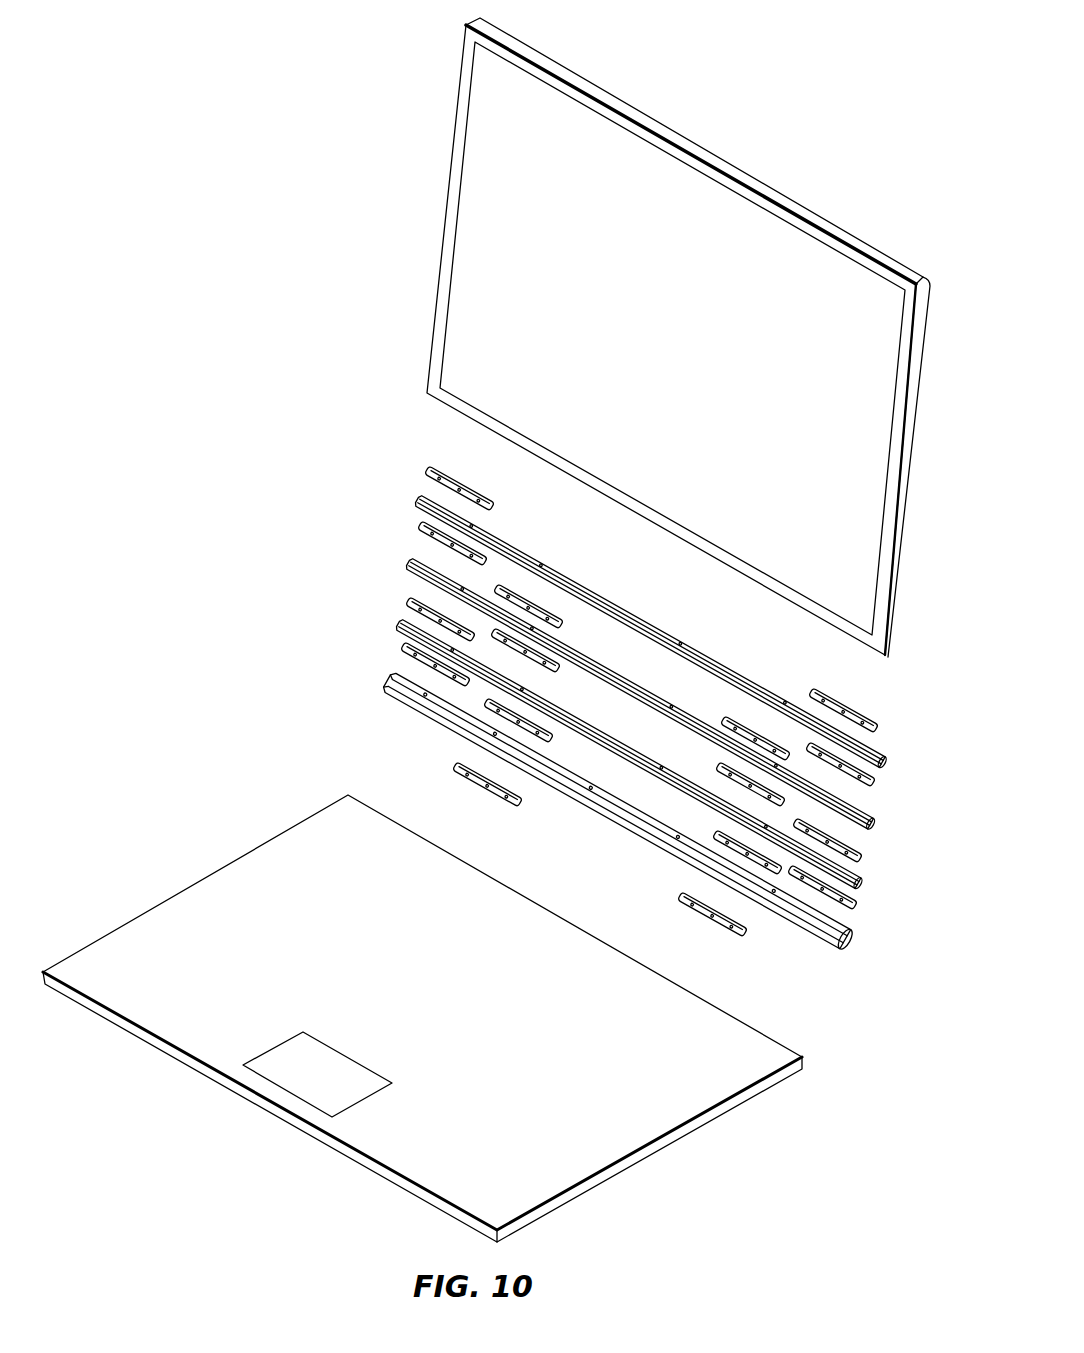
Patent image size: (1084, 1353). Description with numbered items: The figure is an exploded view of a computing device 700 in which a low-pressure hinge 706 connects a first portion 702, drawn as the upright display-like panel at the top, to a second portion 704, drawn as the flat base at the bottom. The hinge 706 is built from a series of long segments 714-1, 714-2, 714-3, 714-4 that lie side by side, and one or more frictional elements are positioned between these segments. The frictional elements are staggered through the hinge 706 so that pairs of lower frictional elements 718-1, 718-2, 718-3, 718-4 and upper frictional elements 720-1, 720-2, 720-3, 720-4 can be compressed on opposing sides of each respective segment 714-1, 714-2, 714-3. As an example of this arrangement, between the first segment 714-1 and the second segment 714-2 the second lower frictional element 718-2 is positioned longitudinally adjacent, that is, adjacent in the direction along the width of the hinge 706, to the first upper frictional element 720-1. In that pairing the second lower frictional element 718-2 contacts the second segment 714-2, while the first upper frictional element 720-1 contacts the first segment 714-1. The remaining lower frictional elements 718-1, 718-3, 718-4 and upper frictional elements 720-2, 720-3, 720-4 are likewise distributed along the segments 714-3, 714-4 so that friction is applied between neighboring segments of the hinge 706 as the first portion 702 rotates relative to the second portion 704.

The computing device 700 is at (871, 44).
The first portion 702 is at (880, 247).
The second portion 704 is at (657, 1150).
The low-pressure hinge 706 is at (340, 589).
The first segment 714-1 is at (856, 950).
The second segment 714-2 is at (866, 890).
The third segment 714-3 is at (876, 830).
The fourth segment 714-4 is at (886, 767).
The first lower frictional element 718-1 is at (684, 894).
The second lower frictional element 718-2 is at (859, 906).
The third lower frictional element 718-3 is at (722, 772).
The fourth lower frictional element 718-4 is at (876, 784).
The first upper frictional element 720-1 is at (715, 836).
The second upper frictional element 720-2 is at (866, 858).
The third upper frictional element 720-3 is at (723, 736).
The fourth upper frictional element 720-4 is at (883, 724).